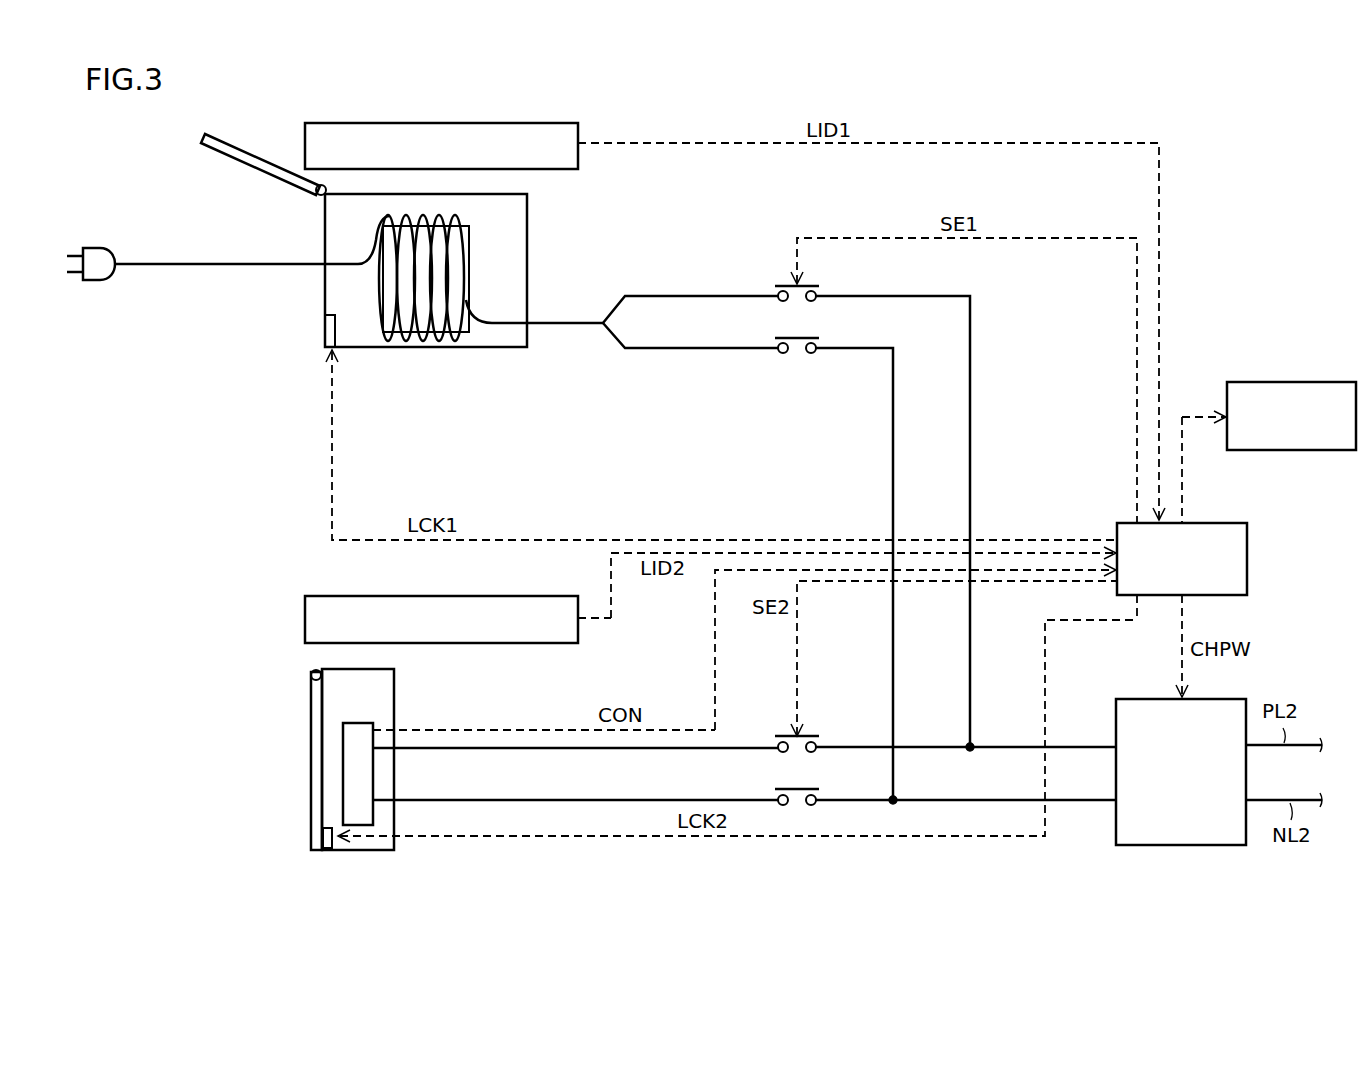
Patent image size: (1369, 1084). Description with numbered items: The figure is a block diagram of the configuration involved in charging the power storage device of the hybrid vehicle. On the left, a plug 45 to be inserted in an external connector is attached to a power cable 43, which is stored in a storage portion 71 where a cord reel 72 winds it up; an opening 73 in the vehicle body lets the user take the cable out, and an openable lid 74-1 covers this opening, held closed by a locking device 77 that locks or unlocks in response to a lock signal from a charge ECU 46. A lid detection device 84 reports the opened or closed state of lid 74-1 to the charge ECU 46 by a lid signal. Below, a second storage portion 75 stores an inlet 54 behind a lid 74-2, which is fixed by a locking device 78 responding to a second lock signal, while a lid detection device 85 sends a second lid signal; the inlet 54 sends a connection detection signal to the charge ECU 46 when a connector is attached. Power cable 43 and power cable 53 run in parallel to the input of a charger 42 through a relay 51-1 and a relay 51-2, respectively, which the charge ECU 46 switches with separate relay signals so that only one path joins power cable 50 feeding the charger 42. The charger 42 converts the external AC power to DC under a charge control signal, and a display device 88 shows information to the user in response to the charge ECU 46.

The plug 45 is at (100, 281).
The power cable 43 is at (278, 266).
The storage portion 71 is at (513, 210).
The cord reel 72 is at (458, 322).
The locking device 77 is at (333, 331).
The lid 74-1 is at (246, 150).
The opening 73 is at (292, 224).
The lid detection device 84 is at (521, 123).
The relay 51-1 is at (766, 280).
The display device 88 is at (1293, 381).
The charge ECU 46 is at (1247, 560).
The lid detection device 85 is at (521, 596).
The storage portion 75 is at (383, 683).
The lid 74-2 is at (313, 751).
The inlet 54 is at (357, 732).
The locking device 78 is at (328, 845).
The power cable 53 is at (566, 733).
The relay 51-2 is at (766, 735).
The power cable 50 is at (1005, 733).
The charger 42 is at (1181, 845).